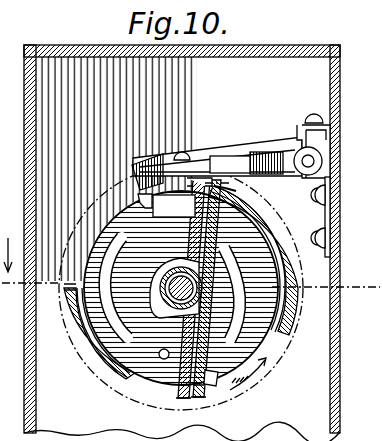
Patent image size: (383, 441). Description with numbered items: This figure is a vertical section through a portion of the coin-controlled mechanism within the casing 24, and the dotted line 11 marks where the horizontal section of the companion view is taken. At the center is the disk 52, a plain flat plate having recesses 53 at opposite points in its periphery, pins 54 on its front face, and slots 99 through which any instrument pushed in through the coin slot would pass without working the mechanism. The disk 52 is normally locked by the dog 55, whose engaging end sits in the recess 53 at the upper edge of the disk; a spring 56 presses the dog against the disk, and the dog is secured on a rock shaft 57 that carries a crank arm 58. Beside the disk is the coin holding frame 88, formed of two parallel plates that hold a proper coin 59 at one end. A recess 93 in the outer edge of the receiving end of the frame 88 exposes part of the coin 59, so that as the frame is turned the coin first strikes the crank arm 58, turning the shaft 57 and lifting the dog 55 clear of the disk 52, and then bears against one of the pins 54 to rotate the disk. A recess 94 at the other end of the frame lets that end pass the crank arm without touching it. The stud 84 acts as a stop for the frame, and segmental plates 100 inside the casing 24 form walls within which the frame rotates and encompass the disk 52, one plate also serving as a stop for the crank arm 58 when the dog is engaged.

The casing 24 is at (192, 243).
The dotted section line 11— 11 is at (14, 299).
The disk 52 is at (234, 335).
The recesses 53 is at (140, 184).
The pins 54 is at (196, 196).
The dog 55 is at (196, 156).
The spring 56 is at (252, 150).
The rock shaft 57 is at (308, 161).
The crank arm 58 is at (228, 160).
The coin 59 is at (248, 210).
The stud 84 is at (282, 340).
The coin holding frame 88 is at (162, 372).
The recess 93 is at (232, 186).
The recess 94 is at (200, 400).
The slots 99 is at (78, 325).
The segmental plates 100 is at (92, 365).